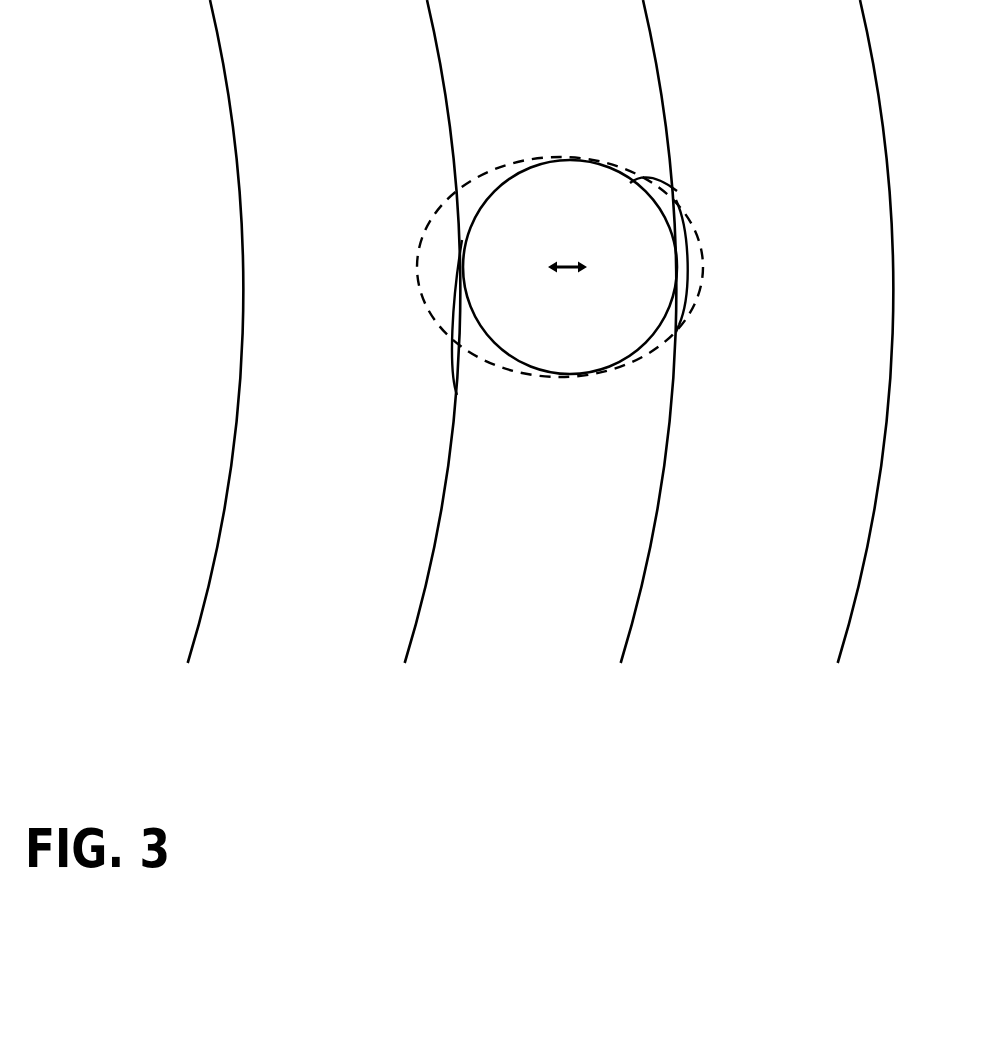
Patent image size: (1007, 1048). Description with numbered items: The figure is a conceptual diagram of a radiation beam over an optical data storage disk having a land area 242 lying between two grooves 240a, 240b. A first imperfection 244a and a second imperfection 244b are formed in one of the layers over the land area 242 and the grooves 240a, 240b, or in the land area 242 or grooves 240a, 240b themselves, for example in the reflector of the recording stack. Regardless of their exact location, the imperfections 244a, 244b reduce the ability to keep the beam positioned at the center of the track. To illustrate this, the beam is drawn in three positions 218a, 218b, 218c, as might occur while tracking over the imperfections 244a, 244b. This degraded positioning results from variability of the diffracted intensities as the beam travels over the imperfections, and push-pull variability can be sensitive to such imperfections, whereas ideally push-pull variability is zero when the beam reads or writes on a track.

The groove 240a is at (348, 634).
The groove 240b is at (795, 634).
The land area 242 is at (553, 634).
The first imperfection 244a is at (447, 365).
The second imperfection 244b is at (695, 258).
The beam position 218a is at (677, 191).
The beam position 218b is at (688, 317).
The beam position 218c is at (435, 217).